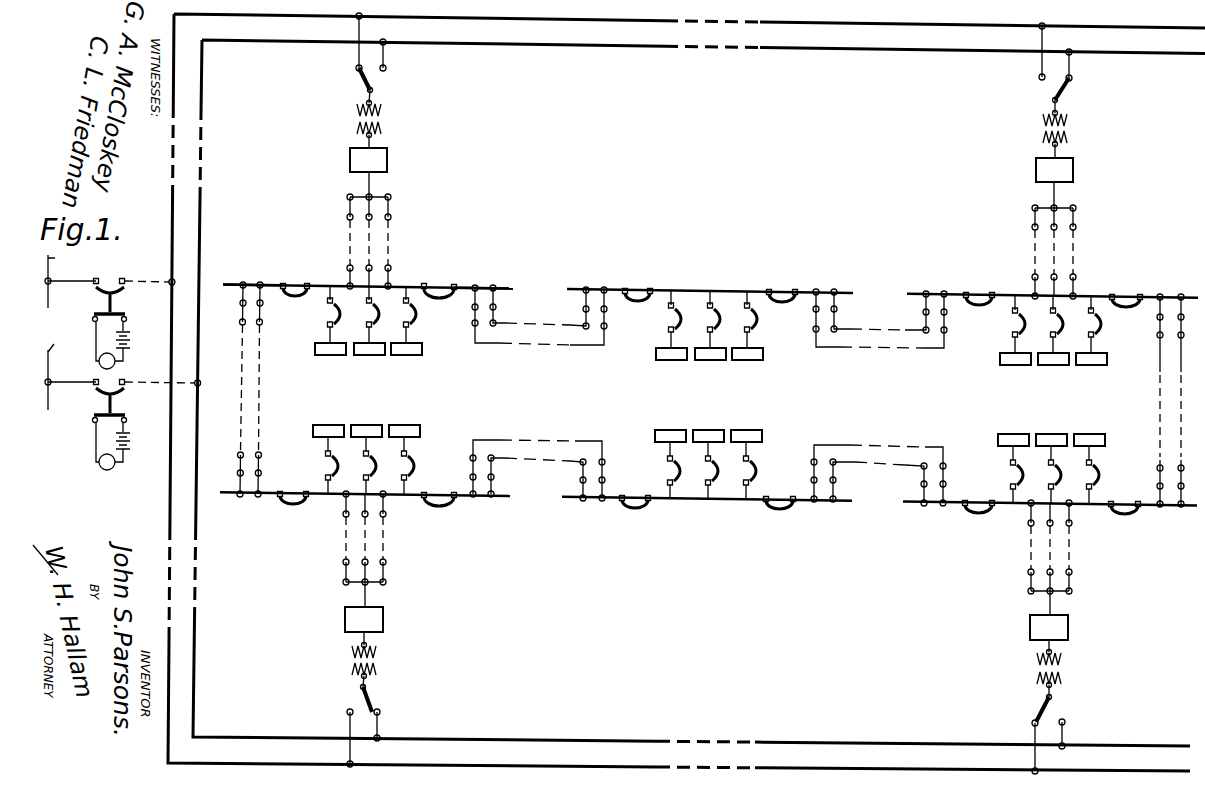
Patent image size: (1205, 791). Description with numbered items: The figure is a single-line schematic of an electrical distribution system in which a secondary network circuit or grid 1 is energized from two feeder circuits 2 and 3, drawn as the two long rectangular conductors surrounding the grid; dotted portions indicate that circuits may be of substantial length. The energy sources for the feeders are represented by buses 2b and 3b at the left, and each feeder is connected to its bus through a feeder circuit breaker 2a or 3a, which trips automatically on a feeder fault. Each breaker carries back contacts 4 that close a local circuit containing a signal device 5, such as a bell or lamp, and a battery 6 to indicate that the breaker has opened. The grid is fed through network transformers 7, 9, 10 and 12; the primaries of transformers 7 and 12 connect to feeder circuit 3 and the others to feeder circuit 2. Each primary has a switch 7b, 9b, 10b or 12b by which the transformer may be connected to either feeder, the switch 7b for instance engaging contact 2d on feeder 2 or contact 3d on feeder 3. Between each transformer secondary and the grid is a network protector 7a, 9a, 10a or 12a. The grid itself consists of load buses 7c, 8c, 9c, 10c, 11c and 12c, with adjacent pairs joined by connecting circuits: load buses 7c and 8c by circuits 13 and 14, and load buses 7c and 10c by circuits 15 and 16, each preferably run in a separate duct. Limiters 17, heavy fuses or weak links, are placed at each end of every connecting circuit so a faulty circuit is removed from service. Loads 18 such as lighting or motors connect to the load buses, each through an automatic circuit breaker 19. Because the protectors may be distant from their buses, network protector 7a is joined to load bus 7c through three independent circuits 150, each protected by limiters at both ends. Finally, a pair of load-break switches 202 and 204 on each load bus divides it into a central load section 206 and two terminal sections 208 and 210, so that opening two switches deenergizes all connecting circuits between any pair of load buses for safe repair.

The secondary network circuit or grid 1 is at (894, 399).
The feeder circuit 2 is at (268, 42).
The feeder circuit 3 is at (262, 10).
The feeder circuit breaker 2a is at (98, 393).
The feeder circuit breaker 3a is at (98, 291).
The bus 2b is at (54, 368).
The bus 3b is at (63, 278).
The contact 2d is at (386, 68).
The contact 3d is at (354, 68).
The back contacts 4 is at (127, 311).
The signal device 5 is at (98, 363).
The battery 6 is at (130, 337).
The network transformer 7 is at (383, 117).
The network protector 7a is at (387, 163).
The switch 7b is at (374, 84).
The load bus 7c is at (333, 284).
The load bus 8c is at (699, 288).
The network transformer 9 is at (1073, 128).
The network protector 9a is at (1074, 172).
The switch 9b is at (1072, 95).
The load bus 9c is at (1086, 292).
The network transformer 10 is at (376, 660).
The network protector 10a is at (383, 621).
The switch 10b is at (375, 700).
The load bus 10c is at (333, 498).
The load bus 11c is at (692, 501).
The network transformer 12 is at (1062, 668).
The network protector 12a is at (1068, 632).
The switch 12b is at (1050, 712).
The load bus 12c is at (1022, 506).
The connecting circuit 13 is at (551, 324).
The connecting circuit 14 is at (555, 348).
The connecting circuit 15 is at (238, 386).
The connecting circuit 16 is at (263, 382).
The limiter 17 is at (392, 207).
The load 18 is at (345, 355).
The automatic circuit breaker 19 is at (330, 315).
The circuit 150 is at (388, 238).
The load-break switch 202 is at (284, 294).
The load-break switch 204 is at (447, 296).
The central load section 206 is at (427, 284).
The terminal section 208 is at (250, 282).
The terminal section 210 is at (495, 284).